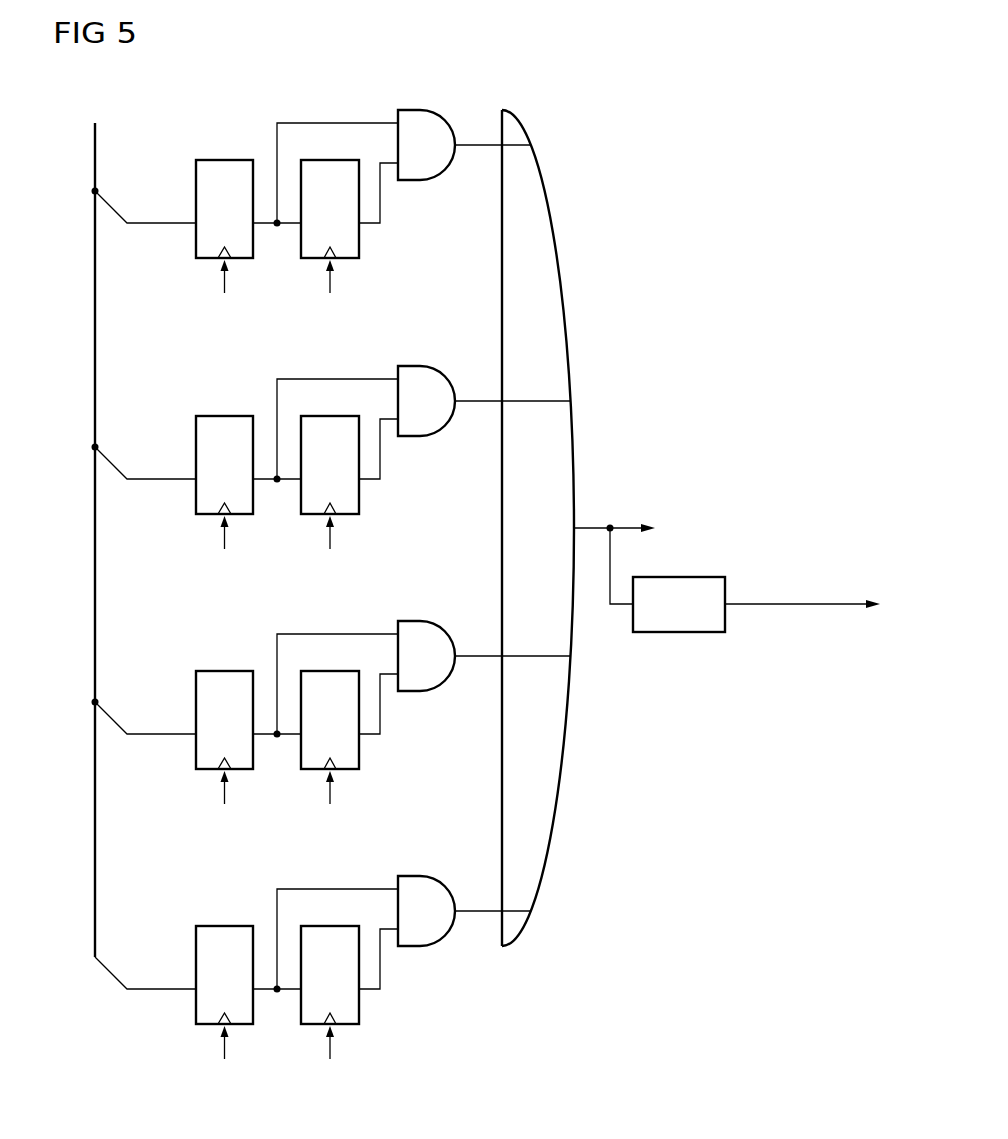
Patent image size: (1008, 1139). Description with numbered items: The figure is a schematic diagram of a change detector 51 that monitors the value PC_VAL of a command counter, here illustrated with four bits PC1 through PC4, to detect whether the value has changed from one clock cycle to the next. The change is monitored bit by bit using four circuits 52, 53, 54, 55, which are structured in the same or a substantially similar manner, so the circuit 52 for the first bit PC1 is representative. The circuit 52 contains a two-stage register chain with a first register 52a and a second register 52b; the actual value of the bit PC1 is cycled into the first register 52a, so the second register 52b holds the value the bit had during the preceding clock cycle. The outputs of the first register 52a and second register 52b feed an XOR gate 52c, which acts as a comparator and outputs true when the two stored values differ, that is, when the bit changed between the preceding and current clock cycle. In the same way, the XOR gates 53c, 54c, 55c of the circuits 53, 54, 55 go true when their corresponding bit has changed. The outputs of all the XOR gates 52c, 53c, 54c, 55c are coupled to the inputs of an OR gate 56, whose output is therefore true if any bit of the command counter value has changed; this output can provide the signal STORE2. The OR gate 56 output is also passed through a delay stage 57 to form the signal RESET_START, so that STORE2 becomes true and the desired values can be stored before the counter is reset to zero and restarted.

The change detector 51 is at (716, 154).
The circuit 52 is at (173, 263).
The first register 52a is at (226, 159).
The second register 52b is at (359, 242).
The XOR gate 52c is at (432, 175).
The circuit 53 is at (173, 519).
The XOR gate 53c is at (432, 431).
The circuit 54 is at (173, 774).
The XOR gate 54c is at (432, 686).
The circuit 55 is at (173, 1029).
The XOR gate 55c is at (432, 941).
The OR gate 56 is at (561, 282).
The delay stage 57 is at (678, 632).